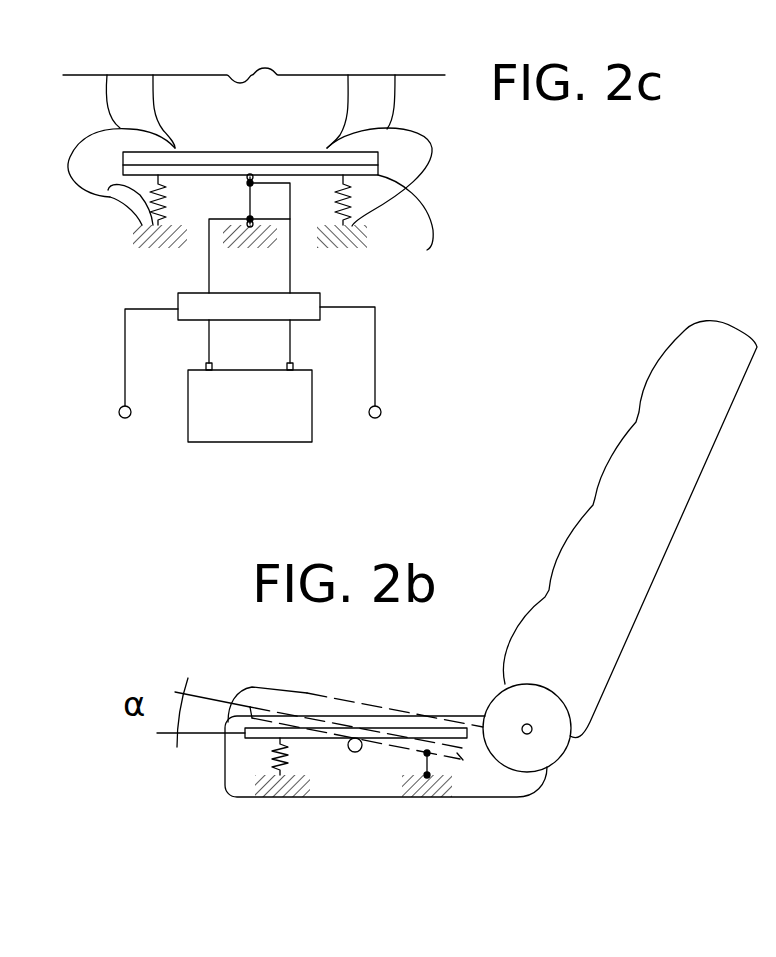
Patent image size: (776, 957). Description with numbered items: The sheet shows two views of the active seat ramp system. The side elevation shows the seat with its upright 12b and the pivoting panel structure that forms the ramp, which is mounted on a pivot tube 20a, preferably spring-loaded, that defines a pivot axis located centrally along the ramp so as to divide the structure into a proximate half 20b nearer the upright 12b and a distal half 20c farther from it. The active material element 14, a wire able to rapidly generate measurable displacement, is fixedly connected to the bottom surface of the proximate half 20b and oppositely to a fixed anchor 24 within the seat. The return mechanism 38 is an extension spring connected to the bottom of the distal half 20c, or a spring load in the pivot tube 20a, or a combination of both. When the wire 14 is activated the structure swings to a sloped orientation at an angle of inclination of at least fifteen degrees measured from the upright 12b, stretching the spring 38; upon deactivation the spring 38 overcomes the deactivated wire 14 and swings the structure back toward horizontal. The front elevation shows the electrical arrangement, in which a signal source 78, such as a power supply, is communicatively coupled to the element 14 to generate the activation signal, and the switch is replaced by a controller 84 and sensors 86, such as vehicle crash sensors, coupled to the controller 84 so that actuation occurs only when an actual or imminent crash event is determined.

In FIG. 2b, the upright 12b is at (720, 419).
In FIG. 2c, the active material element 14 is at (253, 203).
In FIG. 2b, the active material element 14 is at (432, 763).
In FIG. 2c, the pivot tube 20a is at (411, 226).
In FIG. 2b, the pivot tube 20a is at (349, 750).
In FIG. 2b, the proximate half 20b is at (388, 728).
In FIG. 2b, the distal half 20c is at (297, 727).
In FIG. 2b, the fixed anchor 24 is at (260, 777).
In FIG. 2c, the return mechanism 38 is at (107, 197).
In FIG. 2b, the return mechanism 38 is at (273, 752).
In FIG. 2c, the signal source 78 is at (272, 423).
In FIG. 2c, the controller 84 is at (177, 300).
In FIG. 2c, the sensor 86 is at (119, 415).